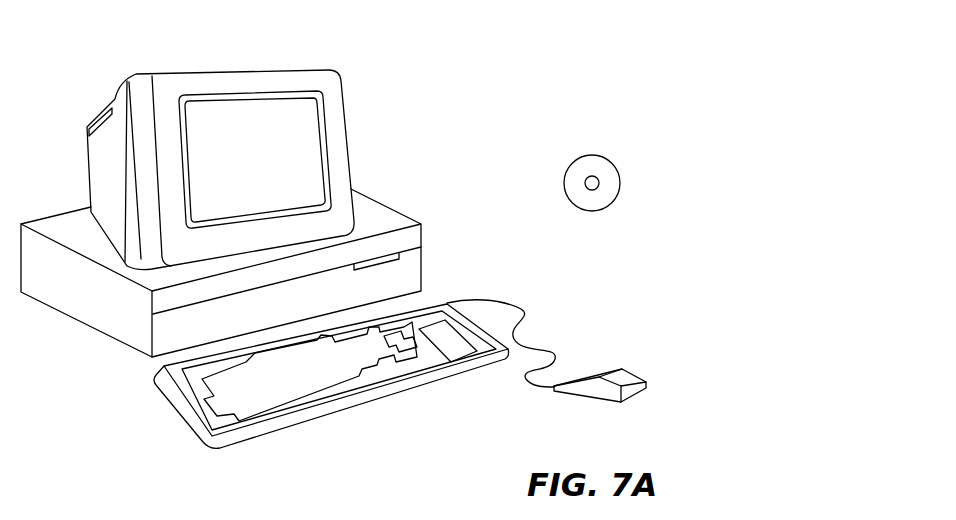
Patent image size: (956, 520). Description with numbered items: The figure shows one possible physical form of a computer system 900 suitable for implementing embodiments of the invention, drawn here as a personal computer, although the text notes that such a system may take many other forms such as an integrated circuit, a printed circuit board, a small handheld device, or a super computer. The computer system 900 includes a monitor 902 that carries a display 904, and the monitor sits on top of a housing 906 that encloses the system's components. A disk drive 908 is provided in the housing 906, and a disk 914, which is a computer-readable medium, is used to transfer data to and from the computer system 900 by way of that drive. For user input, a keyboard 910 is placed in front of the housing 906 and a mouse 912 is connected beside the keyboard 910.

The computer system 900 is at (523, 53).
The monitor 902 is at (350, 167).
The display 904 is at (313, 127).
The housing 906 is at (122, 342).
The disk drive 908 is at (400, 256).
The keyboard 910 is at (338, 413).
The mouse 912 is at (636, 373).
The disk 914 is at (607, 158).